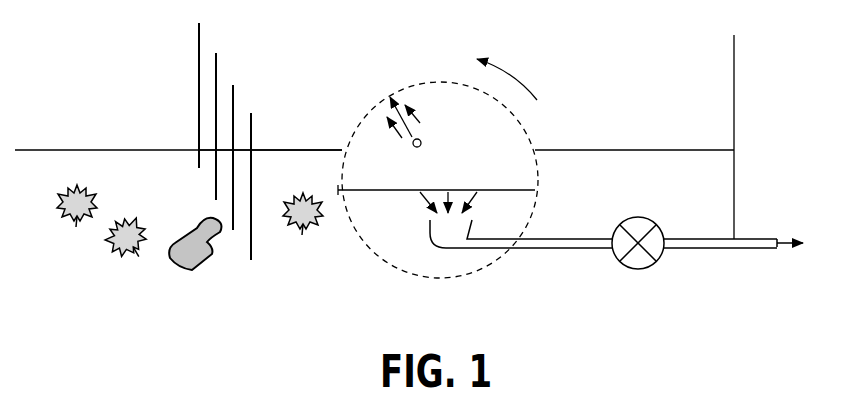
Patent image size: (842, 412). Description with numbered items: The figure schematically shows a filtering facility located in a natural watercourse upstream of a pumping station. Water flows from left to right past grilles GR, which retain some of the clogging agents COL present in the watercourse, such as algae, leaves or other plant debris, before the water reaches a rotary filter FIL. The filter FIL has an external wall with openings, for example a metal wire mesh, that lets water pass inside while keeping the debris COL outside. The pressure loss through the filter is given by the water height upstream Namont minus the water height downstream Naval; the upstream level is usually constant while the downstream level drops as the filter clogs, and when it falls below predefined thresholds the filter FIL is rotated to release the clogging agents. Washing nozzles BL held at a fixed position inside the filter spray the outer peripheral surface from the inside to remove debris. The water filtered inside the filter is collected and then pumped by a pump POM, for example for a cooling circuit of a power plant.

The grilles GR is at (197, 62).
The water height upstream Namont is at (295, 148).
The rotary filter FIL is at (413, 83).
The washing nozzles BL is at (422, 127).
The water height downstream Naval is at (536, 190).
The clogging agents COL is at (113, 247).
The pump POM is at (642, 269).